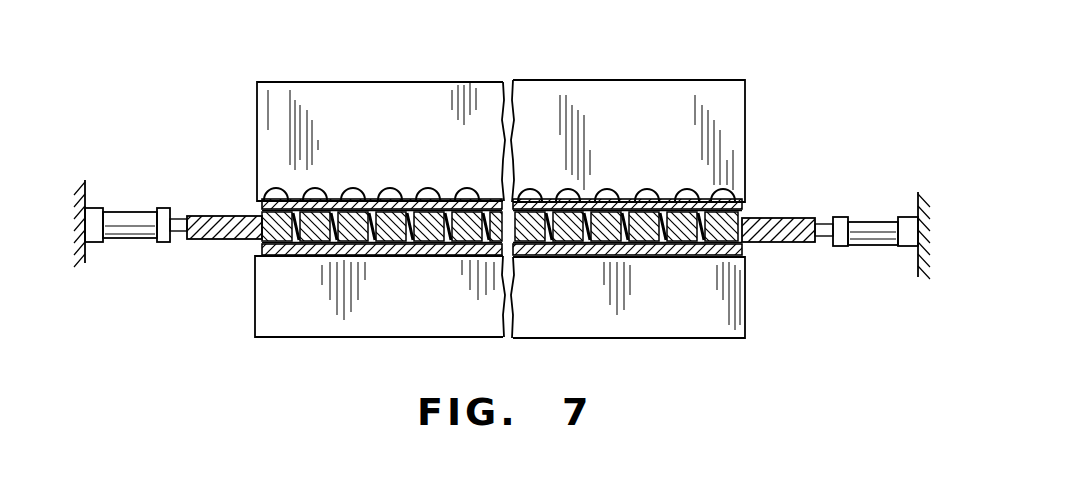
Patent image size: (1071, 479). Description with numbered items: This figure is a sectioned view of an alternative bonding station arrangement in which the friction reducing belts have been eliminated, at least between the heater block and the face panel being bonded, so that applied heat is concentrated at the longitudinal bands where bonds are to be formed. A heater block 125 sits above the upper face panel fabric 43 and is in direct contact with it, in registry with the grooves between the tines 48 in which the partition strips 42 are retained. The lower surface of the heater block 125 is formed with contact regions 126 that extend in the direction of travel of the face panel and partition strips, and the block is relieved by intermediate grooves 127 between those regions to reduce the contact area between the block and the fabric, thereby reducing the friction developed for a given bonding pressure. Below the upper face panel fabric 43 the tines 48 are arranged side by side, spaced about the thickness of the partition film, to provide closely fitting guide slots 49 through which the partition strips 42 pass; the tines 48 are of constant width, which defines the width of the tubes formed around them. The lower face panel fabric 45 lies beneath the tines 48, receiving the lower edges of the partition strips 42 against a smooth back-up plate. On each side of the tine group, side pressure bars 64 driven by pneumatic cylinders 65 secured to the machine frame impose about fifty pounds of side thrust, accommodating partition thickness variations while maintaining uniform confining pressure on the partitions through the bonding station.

The heater block 125 is at (417, 100).
The contact regions 126 is at (333, 194).
The intermediate grooves 127 is at (423, 194).
The upper face panel fabric 43 is at (623, 203).
The side pressure bars 64 is at (228, 220).
The pneumatic cylinders 65 is at (117, 218).
The tines 48 is at (313, 246).
The guide slots 49 is at (660, 241).
The partition strips 42 is at (435, 248).
The lower face panel fabric 45 is at (597, 247).